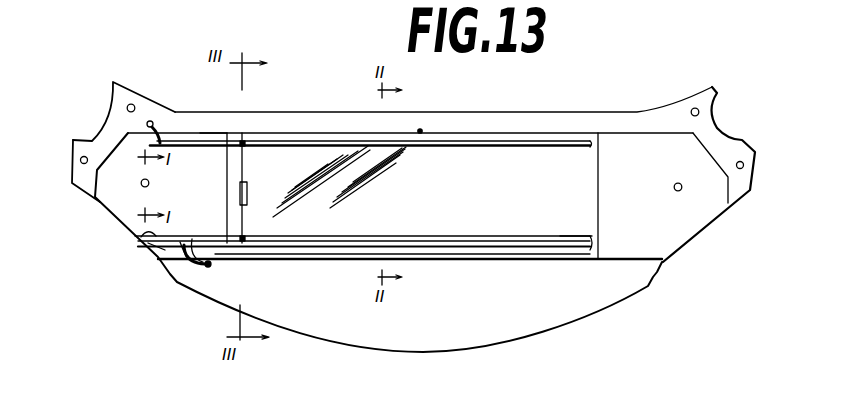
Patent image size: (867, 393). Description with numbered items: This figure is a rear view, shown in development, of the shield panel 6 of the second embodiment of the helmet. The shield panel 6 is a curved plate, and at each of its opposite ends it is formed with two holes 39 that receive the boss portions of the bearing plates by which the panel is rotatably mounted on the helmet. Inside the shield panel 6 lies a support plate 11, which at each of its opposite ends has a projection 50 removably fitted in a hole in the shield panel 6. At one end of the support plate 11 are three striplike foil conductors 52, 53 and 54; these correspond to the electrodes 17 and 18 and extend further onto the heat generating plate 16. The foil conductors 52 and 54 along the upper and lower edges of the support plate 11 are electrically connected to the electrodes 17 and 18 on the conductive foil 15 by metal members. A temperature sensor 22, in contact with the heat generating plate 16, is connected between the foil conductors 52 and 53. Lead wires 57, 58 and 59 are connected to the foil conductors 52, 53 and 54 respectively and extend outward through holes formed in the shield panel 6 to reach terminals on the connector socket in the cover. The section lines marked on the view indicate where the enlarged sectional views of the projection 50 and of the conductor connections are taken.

The shield panel 6 is at (497, 122).
The support plate 11 is at (632, 150).
The conductive foil 15 is at (507, 222).
The heat generating plate 16 is at (420, 130).
The electrode 17 is at (352, 142).
The electrode 18 is at (368, 243).
The temperature sensor 22 is at (240, 190).
The hole 39 is at (85, 156).
The projection 50 is at (142, 186).
The foil conductor 52 is at (213, 140).
The foil conductor 53 is at (140, 240).
The foil conductor 54 is at (163, 250).
The lead wire 57 is at (153, 125).
The lead wire 58 is at (200, 265).
The lead wire 59 is at (187, 244).